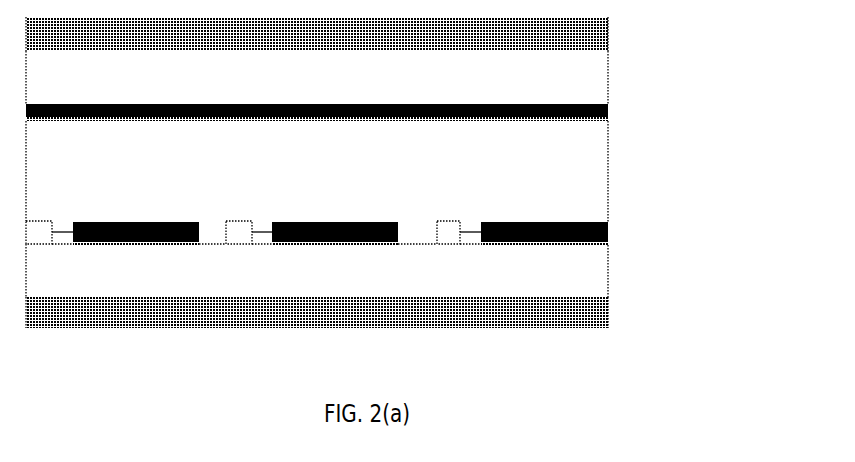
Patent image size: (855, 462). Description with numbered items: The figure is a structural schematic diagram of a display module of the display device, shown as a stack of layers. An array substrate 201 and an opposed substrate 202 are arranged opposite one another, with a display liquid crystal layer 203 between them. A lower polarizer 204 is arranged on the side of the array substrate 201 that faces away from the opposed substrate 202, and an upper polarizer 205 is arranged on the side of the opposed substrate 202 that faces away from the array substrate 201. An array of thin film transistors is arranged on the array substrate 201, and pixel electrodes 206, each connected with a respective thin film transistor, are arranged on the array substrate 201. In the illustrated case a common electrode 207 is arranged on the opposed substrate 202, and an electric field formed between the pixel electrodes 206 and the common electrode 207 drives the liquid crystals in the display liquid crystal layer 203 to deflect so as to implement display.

The array substrate 201 is at (608, 270).
The opposed substrate 202 is at (608, 77).
The display liquid crystal layer 203 is at (608, 175).
The lower polarizer 204 is at (608, 313).
The upper polarizer 205 is at (608, 35).
The pixel electrodes 206 is at (608, 238).
The common electrode 207 is at (608, 110).